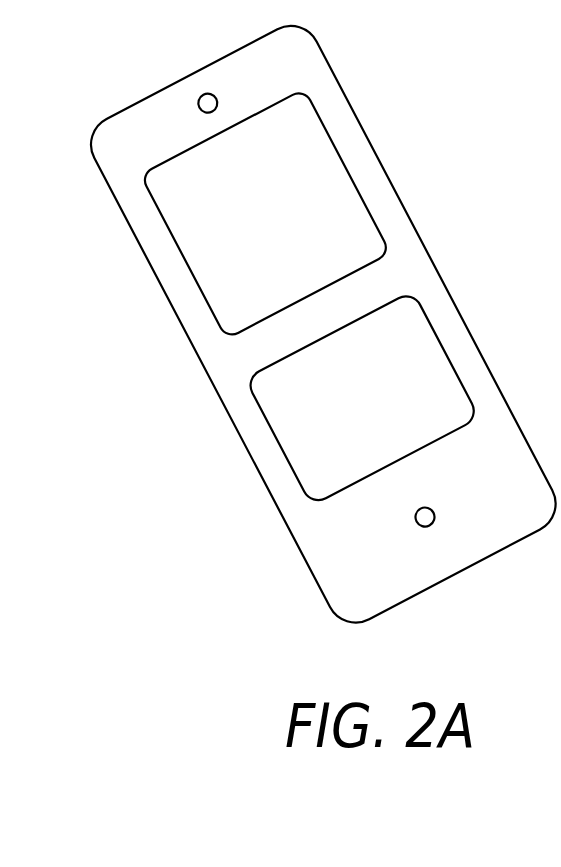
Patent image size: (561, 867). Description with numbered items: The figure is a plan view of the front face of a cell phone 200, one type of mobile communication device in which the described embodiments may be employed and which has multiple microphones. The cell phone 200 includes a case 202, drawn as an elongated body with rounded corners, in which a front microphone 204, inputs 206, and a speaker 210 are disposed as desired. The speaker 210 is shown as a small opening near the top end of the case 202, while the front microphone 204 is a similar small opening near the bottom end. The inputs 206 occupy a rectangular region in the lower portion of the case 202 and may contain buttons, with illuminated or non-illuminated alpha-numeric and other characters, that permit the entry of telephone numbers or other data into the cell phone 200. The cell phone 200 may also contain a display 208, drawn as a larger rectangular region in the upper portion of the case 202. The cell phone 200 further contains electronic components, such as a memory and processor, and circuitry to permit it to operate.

The cell phone 200 is at (432, 56).
The case 202 is at (112, 194).
The front microphone 204 is at (416, 525).
The inputs 206 is at (278, 445).
The display 208 is at (191, 280).
The speaker 210 is at (203, 93).